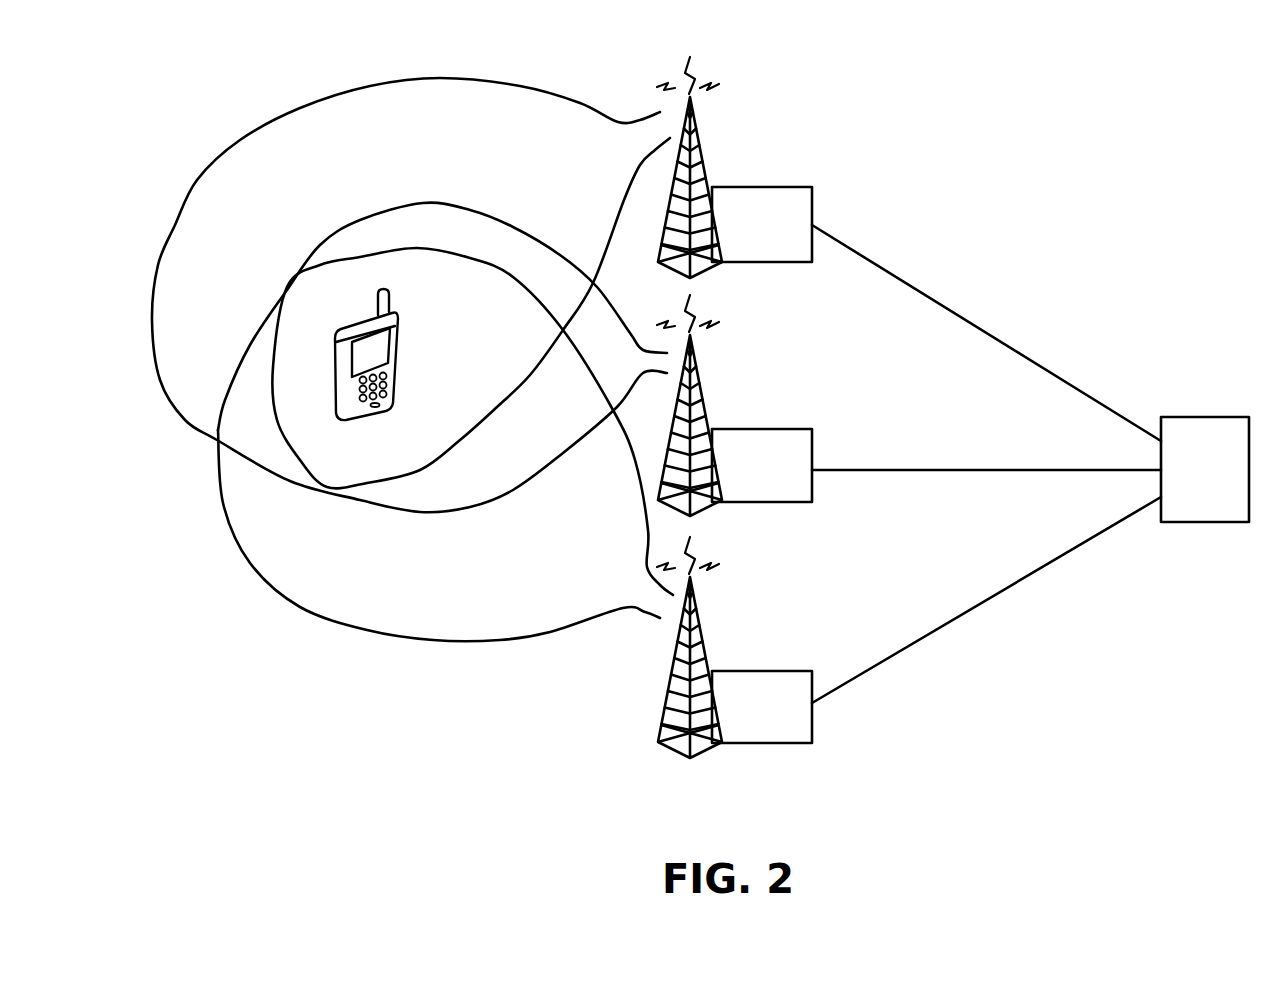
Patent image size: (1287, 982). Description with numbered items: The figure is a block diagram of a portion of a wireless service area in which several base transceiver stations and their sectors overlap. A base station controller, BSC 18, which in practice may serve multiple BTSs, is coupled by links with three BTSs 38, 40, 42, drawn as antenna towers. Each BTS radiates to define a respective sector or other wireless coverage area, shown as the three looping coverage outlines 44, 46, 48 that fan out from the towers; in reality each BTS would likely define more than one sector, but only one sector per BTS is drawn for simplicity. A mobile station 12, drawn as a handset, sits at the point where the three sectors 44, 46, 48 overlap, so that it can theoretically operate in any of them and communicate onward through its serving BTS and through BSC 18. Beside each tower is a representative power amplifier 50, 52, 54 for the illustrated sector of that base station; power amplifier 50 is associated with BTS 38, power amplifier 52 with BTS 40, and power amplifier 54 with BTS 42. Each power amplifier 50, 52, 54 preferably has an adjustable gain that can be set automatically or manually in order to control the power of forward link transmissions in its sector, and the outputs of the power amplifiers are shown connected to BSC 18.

The mobile station 12 is at (398, 345).
The BSC 18 is at (1205, 417).
The BTS 38 is at (702, 152).
The BTS 40 is at (702, 391).
The BTS 42 is at (702, 633).
The sector 44 is at (385, 80).
The sector 46 is at (517, 228).
The sector 48 is at (413, 637).
The power amplifier 50 is at (782, 187).
The power amplifier 52 is at (782, 429).
The power amplifier 54 is at (782, 671).